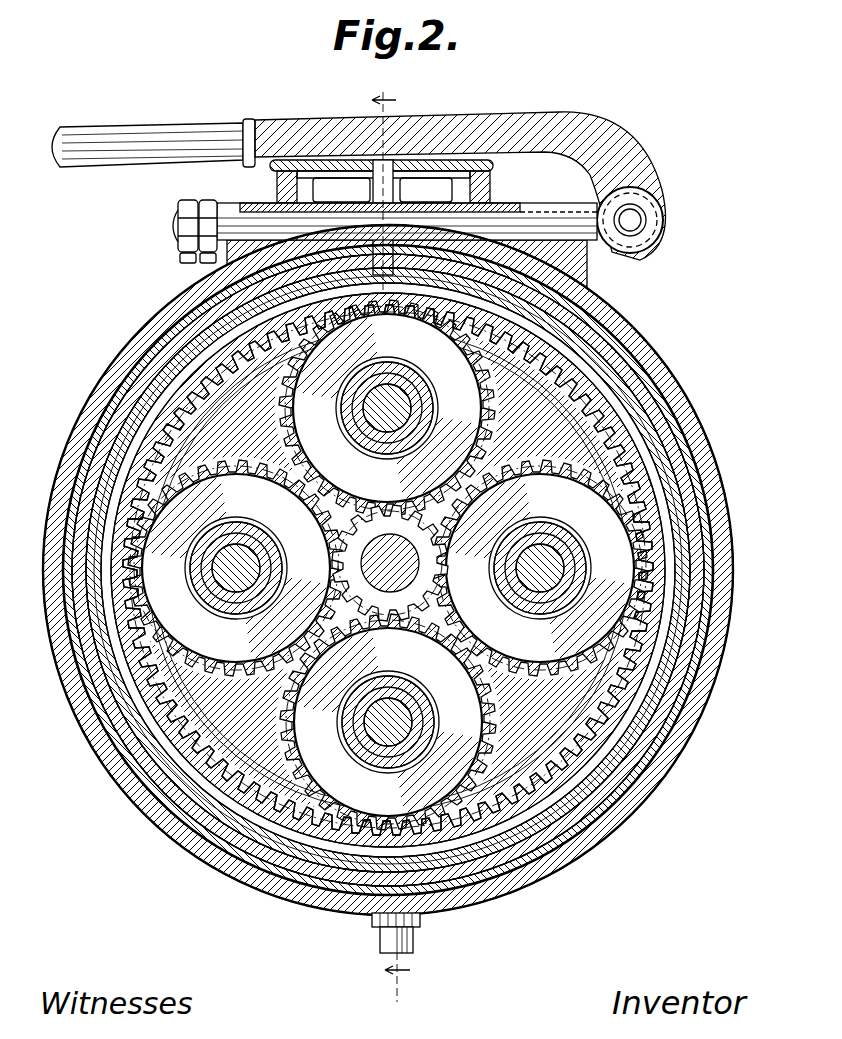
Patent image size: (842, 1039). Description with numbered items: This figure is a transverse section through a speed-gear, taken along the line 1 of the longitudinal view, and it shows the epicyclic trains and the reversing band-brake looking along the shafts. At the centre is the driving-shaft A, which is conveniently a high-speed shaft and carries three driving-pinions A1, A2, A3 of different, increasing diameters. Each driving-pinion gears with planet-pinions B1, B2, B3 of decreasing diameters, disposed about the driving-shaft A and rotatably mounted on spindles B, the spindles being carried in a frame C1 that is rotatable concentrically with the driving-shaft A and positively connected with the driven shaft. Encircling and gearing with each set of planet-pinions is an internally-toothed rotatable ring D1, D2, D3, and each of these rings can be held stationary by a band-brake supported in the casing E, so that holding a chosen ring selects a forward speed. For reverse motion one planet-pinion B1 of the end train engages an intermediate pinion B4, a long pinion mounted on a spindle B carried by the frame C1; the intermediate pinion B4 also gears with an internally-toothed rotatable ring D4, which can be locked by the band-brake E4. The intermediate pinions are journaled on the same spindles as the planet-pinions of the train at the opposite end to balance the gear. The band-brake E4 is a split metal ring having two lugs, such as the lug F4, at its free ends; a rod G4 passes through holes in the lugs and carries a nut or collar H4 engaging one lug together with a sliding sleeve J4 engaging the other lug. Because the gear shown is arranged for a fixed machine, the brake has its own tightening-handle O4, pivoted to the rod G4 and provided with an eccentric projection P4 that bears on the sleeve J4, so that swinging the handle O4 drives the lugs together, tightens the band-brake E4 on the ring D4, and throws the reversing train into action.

The tightening-handle O4 is at (420, 142).
The eccentric projection P4 is at (665, 231).
The lug F4 is at (417, 200).
The sliding sleeve J4 is at (550, 217).
The rod G4 is at (493, 217).
The nut or collar H4 is at (177, 221).
The section line 1- 1 is at (385, 547).
The spindle B is at (290, 300).
The planet-pinion B1 is at (585, 303).
The planet-pinion B2 is at (590, 349).
The planet-pinion B3 is at (730, 499).
The intermediate pinion B4 is at (107, 560).
The frame C1 is at (625, 405).
The driving-shaft A is at (615, 880).
The driving-pinion A1 is at (672, 797).
The driving-pinion A2 is at (690, 736).
The driving-pinion A3 is at (720, 671).
The internally-toothed rotatable ring D1 is at (575, 865).
The internally-toothed rotatable ring D2 is at (290, 803).
The internally-toothed rotatable ring D3 is at (733, 527).
The internally-toothed rotatable ring D4 is at (640, 611).
The casing E is at (200, 800).
The band-brake E4 is at (467, 903).